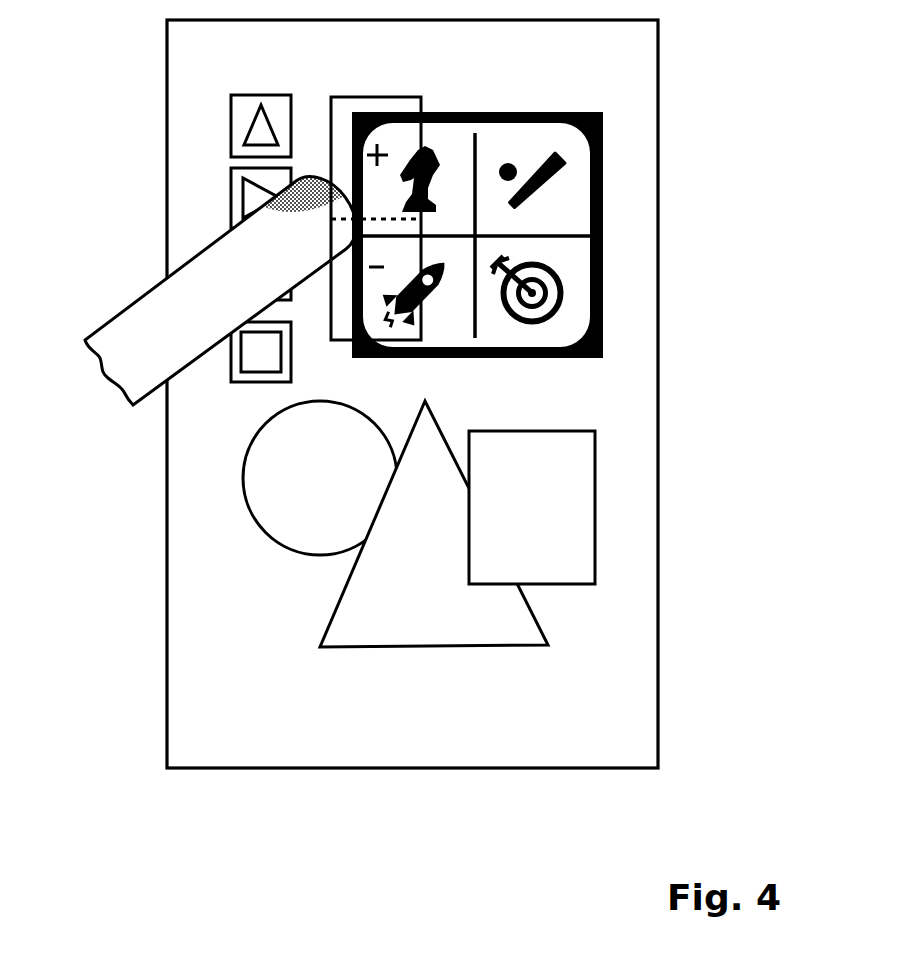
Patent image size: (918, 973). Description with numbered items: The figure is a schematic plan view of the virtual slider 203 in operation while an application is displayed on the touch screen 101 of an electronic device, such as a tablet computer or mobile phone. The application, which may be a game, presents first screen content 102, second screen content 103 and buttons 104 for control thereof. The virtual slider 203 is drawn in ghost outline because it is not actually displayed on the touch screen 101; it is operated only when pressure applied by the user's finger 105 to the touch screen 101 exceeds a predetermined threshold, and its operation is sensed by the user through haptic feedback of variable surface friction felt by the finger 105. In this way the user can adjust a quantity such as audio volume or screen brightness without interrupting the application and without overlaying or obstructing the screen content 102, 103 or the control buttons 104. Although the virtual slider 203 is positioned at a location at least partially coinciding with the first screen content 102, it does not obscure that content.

The touch screen 101 is at (640, 53).
The first screen content 102 is at (545, 267).
The second screen content 103 is at (573, 505).
The buttons 104 is at (275, 102).
The user's finger 105 is at (162, 337).
The virtual slider 203 is at (402, 332).